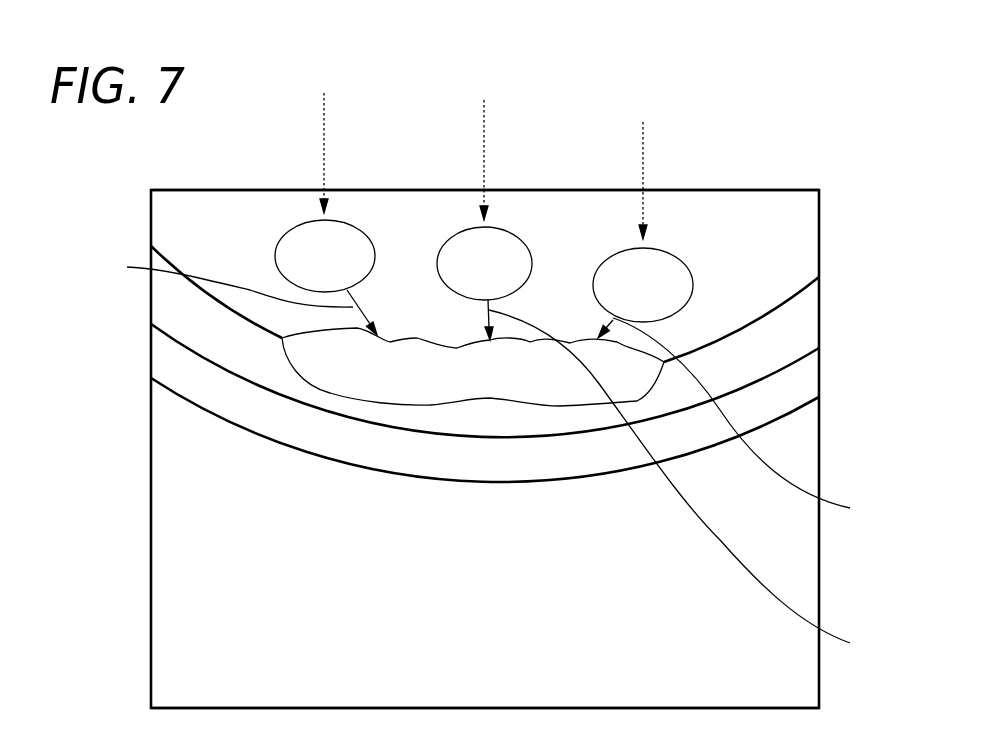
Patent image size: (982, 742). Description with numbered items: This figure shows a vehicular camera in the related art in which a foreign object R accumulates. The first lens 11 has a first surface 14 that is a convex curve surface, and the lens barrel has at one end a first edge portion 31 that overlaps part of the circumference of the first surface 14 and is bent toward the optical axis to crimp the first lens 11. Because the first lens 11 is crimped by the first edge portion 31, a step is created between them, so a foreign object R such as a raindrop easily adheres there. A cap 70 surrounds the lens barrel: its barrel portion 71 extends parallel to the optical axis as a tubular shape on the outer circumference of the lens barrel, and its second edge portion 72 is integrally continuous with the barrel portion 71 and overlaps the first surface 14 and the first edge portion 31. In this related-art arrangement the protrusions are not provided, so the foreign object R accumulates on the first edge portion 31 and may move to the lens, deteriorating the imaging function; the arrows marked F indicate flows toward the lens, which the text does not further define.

The first lens 11 is at (672, 190).
The first surface 14 is at (747, 225).
The first edge portion 31 is at (763, 357).
The cap 70 is at (151, 545).
The barrel portion 71 is at (220, 652).
The second edge portion 72 is at (170, 418).
The force / flow F is at (324, 177).
The foreign object R is at (368, 232).